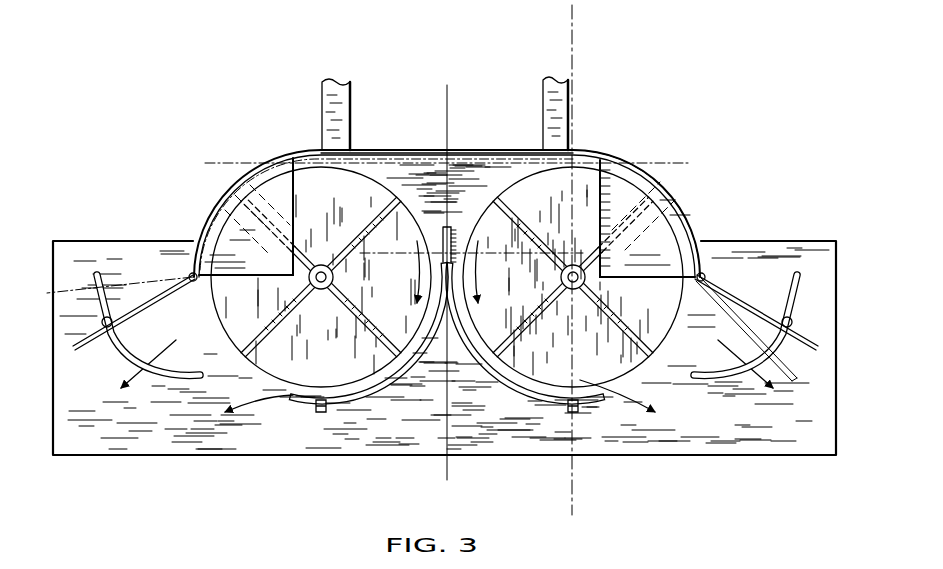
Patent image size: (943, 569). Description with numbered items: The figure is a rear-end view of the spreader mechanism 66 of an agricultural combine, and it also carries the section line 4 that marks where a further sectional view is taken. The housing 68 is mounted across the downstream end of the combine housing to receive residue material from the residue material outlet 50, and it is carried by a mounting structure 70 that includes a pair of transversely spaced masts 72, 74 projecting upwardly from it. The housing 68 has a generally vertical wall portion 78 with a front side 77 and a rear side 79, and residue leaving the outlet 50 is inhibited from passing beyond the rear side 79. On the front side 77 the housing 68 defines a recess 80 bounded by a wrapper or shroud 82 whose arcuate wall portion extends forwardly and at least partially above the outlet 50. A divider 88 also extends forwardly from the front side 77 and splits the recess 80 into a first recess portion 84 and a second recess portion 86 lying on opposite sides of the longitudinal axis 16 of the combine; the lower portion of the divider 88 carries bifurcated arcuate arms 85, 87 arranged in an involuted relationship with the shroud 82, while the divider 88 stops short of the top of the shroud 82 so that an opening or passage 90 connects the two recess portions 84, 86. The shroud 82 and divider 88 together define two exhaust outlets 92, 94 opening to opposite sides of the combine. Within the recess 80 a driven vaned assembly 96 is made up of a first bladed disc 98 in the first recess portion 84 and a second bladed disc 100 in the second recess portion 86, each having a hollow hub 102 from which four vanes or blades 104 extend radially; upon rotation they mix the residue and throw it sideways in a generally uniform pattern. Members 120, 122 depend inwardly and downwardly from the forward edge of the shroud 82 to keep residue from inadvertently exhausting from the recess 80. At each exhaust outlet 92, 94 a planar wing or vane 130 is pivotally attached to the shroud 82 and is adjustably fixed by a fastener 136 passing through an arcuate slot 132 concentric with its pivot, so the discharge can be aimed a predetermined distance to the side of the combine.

The section line 4- 4 is at (634, 33).
The longitudinal axis 16 is at (447, 112).
The residue material outlet 50 is at (477, 166).
The spreader mechanism 66 is at (177, 192).
The housing 68 is at (333, 458).
The mounting structure 70 is at (320, 101).
The mast 72 is at (541, 90).
The mast 74 is at (352, 108).
The front side 77 is at (757, 417).
The vertical wall portion 78 is at (192, 438).
The rear side 79 is at (653, 445).
The recess 80 is at (375, 160).
The shroud 82 is at (608, 166).
The first recess portion 84 is at (572, 401).
The arcuate arm 85 is at (587, 396).
The second recess portion 86 is at (367, 396).
The arcuate arm 87 is at (292, 398).
The divider 88 is at (319, 414).
The opening or passage 90 is at (455, 170).
The exhaust outlet 92 is at (716, 263).
The exhaust outlet 94 is at (190, 275).
The vaned assembly 96 is at (270, 152).
The first bladed disc 98 is at (648, 372).
The second bladed disc 100 is at (237, 358).
The hub 102 is at (323, 291).
The vane or blade 104 is at (380, 247).
The member 120 is at (662, 248).
The member 122 is at (230, 223).
The wing or vane 130 is at (147, 297).
The arcuate slot 132 is at (800, 272).
The fastener 136 is at (795, 322).